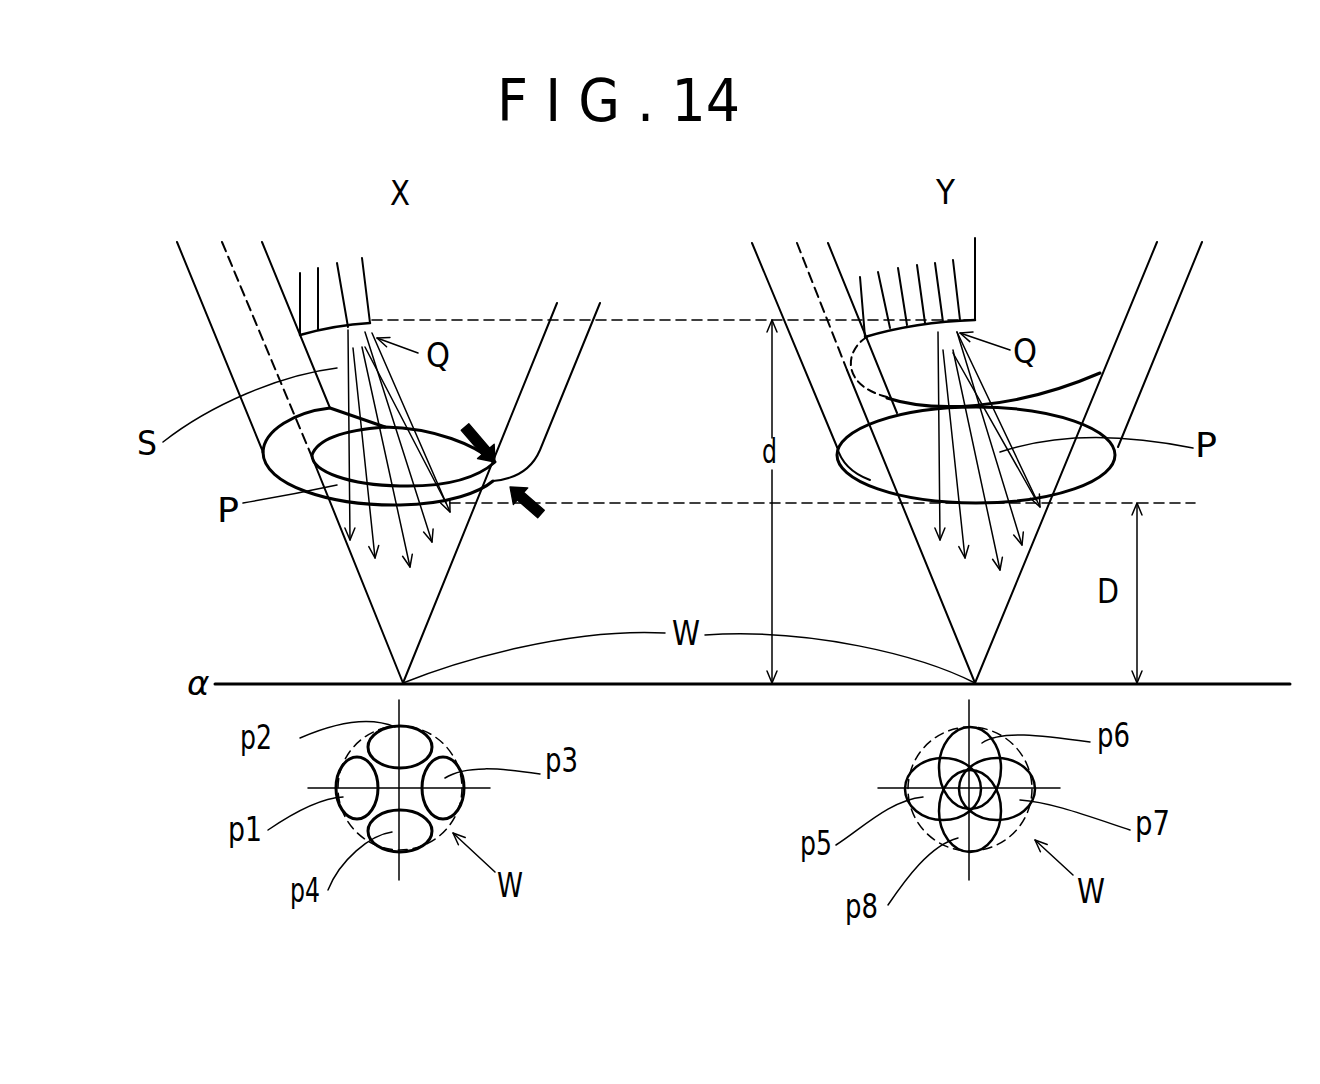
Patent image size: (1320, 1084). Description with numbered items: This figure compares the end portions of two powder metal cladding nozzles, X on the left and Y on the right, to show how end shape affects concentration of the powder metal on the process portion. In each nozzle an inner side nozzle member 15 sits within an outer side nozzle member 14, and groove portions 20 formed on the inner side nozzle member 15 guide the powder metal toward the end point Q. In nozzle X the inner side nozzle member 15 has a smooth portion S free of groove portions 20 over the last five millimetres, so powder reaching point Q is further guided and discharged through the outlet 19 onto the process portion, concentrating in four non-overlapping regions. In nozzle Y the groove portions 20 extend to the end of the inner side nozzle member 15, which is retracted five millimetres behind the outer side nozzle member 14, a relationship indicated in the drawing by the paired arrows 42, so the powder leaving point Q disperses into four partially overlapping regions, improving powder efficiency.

The outer side nozzle member 14 is at (867, 487).
The inner side nozzle member 15 is at (557, 307).
The outlet 19 is at (357, 417).
The groove portions 20 is at (330, 280).
The gap between emission end and aperture 42 is at (493, 476).